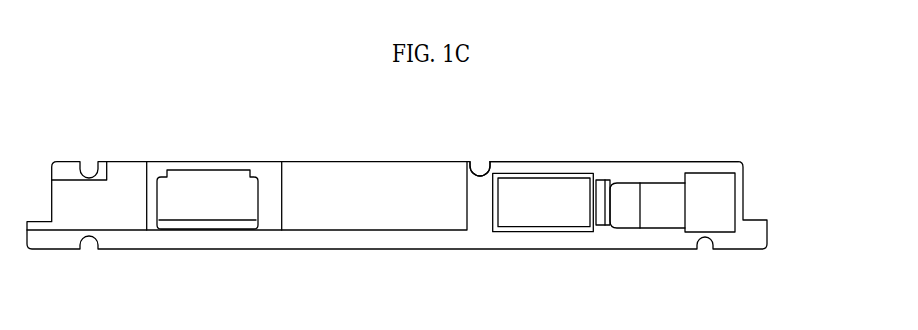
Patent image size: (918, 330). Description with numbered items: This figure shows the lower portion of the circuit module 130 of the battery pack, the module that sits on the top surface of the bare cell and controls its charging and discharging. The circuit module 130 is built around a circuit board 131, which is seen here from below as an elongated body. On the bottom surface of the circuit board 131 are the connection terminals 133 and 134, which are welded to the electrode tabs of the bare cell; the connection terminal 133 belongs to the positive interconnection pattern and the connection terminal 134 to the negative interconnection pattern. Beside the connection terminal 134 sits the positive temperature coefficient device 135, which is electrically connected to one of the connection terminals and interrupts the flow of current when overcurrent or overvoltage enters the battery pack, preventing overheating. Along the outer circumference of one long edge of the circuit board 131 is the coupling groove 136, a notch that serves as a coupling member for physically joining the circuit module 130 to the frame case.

The circuit module 130 is at (778, 147).
The circuit board 131 is at (600, 167).
The connection terminal 133 is at (203, 210).
The connection terminal 134 is at (548, 210).
The positive temperature coefficient (PTC) device 135 is at (623, 213).
The coupling groove 136 is at (482, 167).